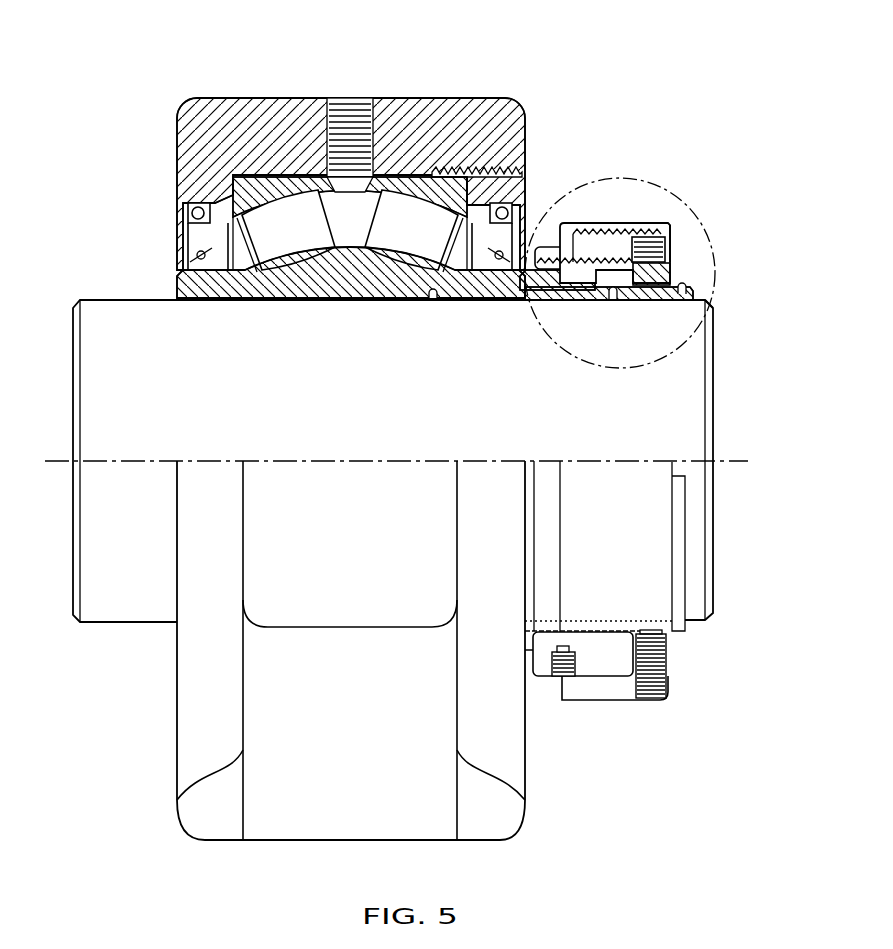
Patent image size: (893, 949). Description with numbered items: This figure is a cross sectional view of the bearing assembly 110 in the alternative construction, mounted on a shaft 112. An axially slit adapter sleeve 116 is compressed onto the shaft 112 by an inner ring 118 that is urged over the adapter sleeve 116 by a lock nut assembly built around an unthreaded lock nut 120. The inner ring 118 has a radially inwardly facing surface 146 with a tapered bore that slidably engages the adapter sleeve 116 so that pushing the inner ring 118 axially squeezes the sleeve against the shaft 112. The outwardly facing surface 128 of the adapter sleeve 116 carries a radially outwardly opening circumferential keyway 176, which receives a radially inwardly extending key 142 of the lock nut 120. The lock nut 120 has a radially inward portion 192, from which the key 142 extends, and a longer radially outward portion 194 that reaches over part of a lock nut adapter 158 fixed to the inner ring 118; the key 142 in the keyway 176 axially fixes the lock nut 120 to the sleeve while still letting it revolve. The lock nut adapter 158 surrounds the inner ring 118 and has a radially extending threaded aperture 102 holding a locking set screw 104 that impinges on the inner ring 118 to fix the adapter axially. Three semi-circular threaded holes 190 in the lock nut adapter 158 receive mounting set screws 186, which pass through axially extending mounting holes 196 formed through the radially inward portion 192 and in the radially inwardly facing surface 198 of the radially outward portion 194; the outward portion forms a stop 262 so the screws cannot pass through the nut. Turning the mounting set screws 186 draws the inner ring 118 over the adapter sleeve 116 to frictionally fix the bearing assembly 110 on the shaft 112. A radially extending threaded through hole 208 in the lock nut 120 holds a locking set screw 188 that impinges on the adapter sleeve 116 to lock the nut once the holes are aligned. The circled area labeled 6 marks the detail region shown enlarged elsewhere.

The bearing assembly 110 is at (547, 55).
The inner ring 118 is at (178, 287).
The adapter sleeve 116 is at (375, 305).
The radially inwardly facing surface 146 is at (435, 302).
The lock nut 120 is at (637, 221).
The radially outward portion 194 is at (661, 228).
The mounting holes 196 is at (664, 238).
The mounting set screws 186 is at (673, 239).
The radially inward portion 192 is at (678, 274).
The semi-circular threaded holes 190 is at (553, 278).
The lock nut adapter 158 is at (553, 244).
The stop 262 is at (570, 236).
The outwardly facing surface 128 is at (614, 294).
The circumferential keyway 176 is at (660, 294).
The shaft 112 is at (713, 304).
The key 142 is at (668, 286).
The detail view 6 is at (704, 233).
The radially inwardly facing surface 198 is at (600, 680).
The locking set screw 104 is at (559, 683).
The threaded aperture 102 is at (572, 660).
The locking set screw 188 is at (653, 700).
The threaded through hole 208 is at (650, 703).